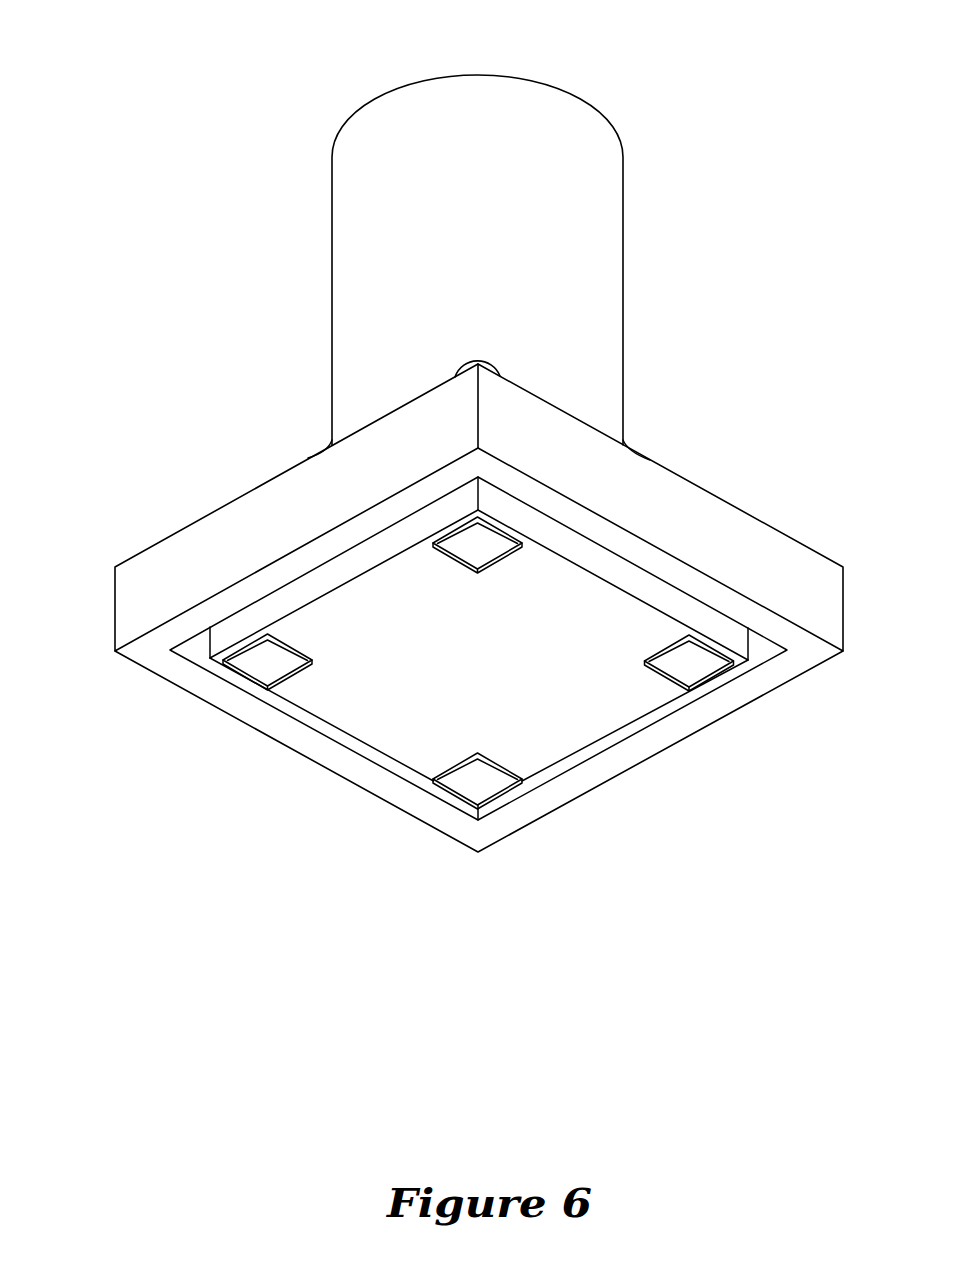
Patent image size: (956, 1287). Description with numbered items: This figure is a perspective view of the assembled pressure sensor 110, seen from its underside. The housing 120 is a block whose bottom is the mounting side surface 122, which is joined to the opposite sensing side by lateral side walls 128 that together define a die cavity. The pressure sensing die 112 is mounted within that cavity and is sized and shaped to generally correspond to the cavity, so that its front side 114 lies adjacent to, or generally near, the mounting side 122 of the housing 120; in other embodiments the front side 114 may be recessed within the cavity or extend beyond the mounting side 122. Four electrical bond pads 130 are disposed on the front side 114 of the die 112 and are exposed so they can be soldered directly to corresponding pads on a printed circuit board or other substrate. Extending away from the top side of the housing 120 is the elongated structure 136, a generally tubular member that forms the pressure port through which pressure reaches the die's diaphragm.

The pressure sensor 110 is at (163, 50).
The pressure sensing die 112 is at (527, 745).
The front side of the pressure sensing die 114 is at (610, 710).
The housing 120 is at (728, 502).
The mounting side surface 122 is at (152, 652).
The lateral side walls 128 is at (190, 558).
The electrical bond pads 130 is at (473, 545).
The elongated structure 136 is at (585, 265).